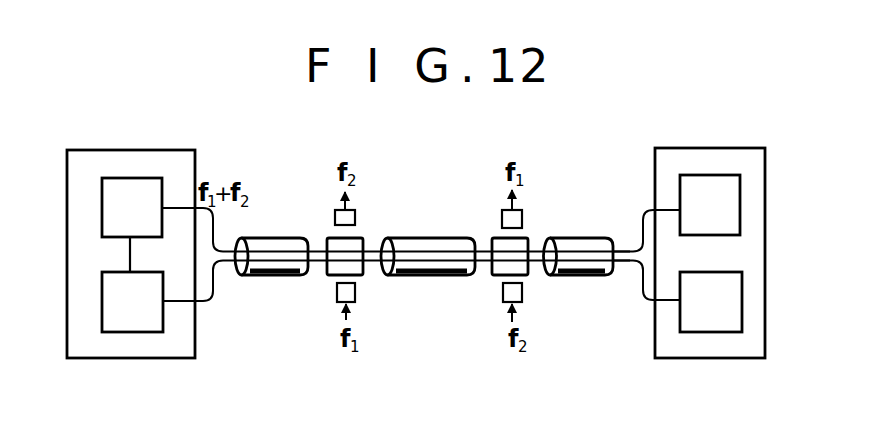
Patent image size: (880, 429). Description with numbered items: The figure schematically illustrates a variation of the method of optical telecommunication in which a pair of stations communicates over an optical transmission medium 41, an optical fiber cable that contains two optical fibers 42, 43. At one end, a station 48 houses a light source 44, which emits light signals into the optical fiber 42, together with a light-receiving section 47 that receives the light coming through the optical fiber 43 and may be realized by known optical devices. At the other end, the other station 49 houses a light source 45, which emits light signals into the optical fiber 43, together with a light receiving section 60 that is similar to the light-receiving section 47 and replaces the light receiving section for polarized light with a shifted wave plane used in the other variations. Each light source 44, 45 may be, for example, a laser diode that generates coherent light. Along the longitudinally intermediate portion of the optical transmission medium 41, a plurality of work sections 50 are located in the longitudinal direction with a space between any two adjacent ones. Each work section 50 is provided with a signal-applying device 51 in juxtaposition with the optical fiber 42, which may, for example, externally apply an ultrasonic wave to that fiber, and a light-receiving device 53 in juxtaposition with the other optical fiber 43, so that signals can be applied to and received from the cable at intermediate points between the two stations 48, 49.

The optical transmission medium 41 is at (424, 234).
The optical fiber 42 is at (628, 265).
The optical fiber 43 is at (630, 248).
The light source 44 is at (712, 332).
The light source 45 is at (148, 185).
The light-receiving section 47 is at (727, 172).
The station 48 is at (705, 153).
The station 49 is at (117, 158).
The work section 50 is at (326, 236).
The signal-applying device 51 is at (355, 297).
The light-receiving device 53 is at (355, 214).
The light receiving section 60 is at (143, 330).